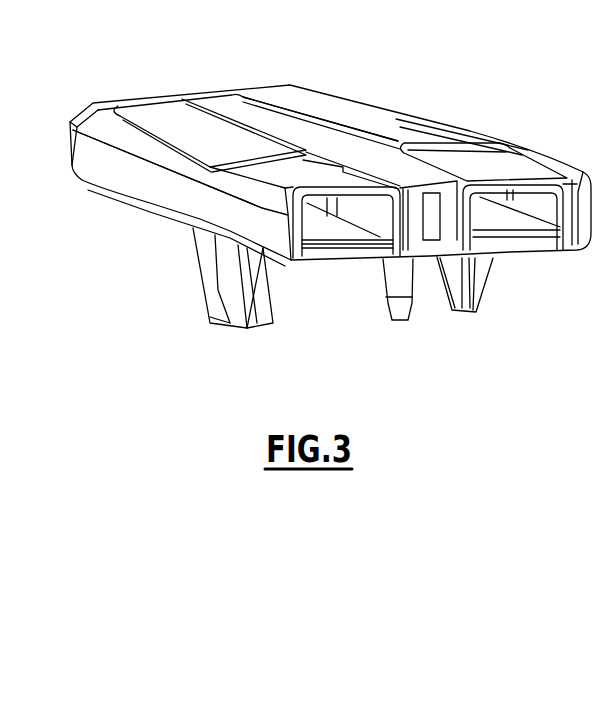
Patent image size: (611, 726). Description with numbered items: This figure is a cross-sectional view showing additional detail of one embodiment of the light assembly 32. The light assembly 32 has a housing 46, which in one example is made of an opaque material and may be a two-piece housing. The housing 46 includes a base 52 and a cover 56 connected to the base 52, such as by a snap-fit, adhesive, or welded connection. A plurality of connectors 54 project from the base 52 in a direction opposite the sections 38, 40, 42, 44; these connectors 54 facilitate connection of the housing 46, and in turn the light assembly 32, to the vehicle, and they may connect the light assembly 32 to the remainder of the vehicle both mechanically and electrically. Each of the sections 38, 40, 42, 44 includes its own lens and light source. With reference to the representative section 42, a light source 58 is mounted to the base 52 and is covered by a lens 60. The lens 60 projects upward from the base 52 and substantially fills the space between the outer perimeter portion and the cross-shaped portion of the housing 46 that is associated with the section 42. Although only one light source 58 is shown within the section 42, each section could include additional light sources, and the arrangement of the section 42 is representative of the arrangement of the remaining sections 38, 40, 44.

The light assembly 32 is at (443, 76).
The section 38 is at (149, 107).
The section 40 is at (373, 116).
The section 42 is at (314, 165).
The section 44 is at (515, 165).
The housing 46 is at (174, 231).
The base 52 is at (350, 257).
The connectors 54 is at (207, 329).
The cover 56 is at (413, 233).
The light source 58 is at (334, 246).
The lens 60 is at (322, 196).